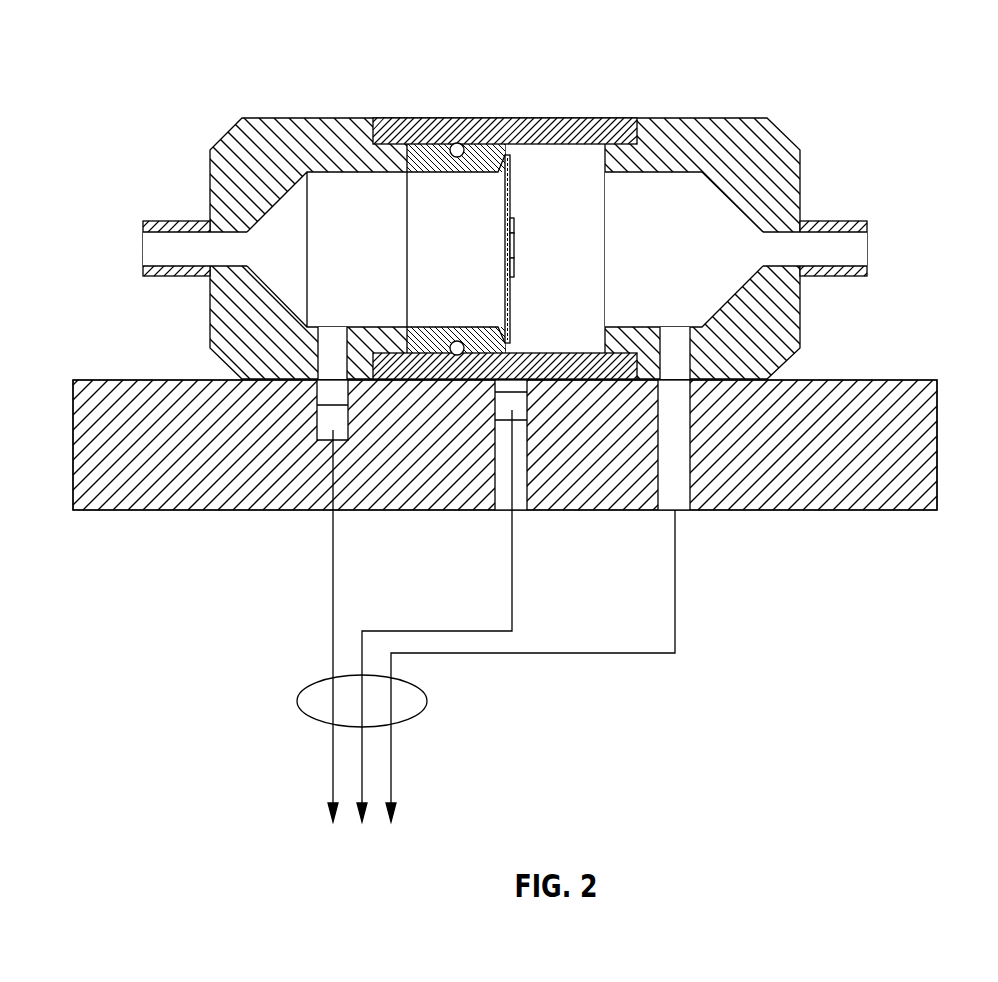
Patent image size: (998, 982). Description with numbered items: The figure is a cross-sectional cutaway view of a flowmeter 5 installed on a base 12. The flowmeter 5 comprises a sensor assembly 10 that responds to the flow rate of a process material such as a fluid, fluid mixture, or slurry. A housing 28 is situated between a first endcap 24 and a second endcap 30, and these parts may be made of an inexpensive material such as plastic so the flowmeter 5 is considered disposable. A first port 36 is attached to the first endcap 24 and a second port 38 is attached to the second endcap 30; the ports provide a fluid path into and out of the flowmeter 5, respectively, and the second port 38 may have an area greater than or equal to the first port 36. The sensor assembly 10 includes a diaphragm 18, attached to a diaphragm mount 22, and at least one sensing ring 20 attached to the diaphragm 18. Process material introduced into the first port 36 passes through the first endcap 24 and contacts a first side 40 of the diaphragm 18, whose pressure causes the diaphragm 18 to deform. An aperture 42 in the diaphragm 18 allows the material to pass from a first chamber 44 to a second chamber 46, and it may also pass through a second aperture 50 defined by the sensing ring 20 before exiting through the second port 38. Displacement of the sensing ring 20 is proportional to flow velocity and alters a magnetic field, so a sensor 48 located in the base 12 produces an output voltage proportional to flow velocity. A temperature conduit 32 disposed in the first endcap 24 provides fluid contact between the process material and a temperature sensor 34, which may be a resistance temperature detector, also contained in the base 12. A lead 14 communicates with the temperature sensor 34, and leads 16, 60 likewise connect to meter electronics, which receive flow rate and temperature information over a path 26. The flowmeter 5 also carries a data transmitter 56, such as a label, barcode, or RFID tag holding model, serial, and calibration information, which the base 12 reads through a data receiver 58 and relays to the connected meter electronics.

The flowmeter 5 is at (344, 94).
The sensor assembly 10 is at (520, 180).
The base 12 is at (928, 445).
The lead 14 is at (332, 586).
The lead 16 is at (511, 559).
The diaphragm 18 is at (510, 210).
The sensing ring 20 is at (507, 227).
The diaphragm mount 22 is at (485, 153).
The first endcap 24 is at (300, 118).
The path 26 is at (297, 700).
The housing 28 is at (520, 127).
The second endcap 30 is at (715, 127).
The temperature conduit 32 is at (327, 365).
The temperature sensor 34 is at (336, 430).
The first port 36 is at (165, 220).
The second port 38 is at (858, 248).
The first side 40 is at (507, 287).
The aperture 42 is at (513, 243).
The first chamber 44 is at (417, 302).
The second chamber 46 is at (590, 215).
The sensor 48 is at (511, 410).
The second aperture 50 is at (513, 260).
The data transmitter 56 is at (680, 363).
The data receiver 58 is at (680, 409).
The lead 60 is at (675, 583).